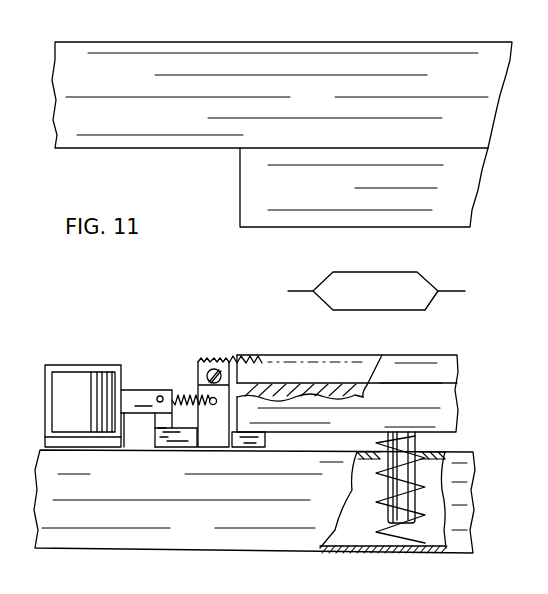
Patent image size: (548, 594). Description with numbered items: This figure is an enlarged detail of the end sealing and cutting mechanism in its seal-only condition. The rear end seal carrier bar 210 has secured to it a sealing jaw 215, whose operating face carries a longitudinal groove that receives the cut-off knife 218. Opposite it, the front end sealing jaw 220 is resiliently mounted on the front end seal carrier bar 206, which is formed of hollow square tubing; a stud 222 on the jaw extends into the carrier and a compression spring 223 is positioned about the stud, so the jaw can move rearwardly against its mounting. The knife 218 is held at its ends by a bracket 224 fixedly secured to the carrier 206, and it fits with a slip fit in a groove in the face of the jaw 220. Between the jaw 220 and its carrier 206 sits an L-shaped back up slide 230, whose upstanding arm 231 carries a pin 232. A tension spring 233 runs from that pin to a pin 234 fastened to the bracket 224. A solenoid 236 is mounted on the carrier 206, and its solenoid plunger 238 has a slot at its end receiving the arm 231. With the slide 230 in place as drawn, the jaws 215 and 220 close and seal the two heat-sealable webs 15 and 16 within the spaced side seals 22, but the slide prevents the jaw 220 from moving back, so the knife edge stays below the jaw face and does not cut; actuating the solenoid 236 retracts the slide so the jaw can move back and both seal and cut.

The rear end seal carrier bar 210 is at (151, 42).
The sealing jaw 215 is at (240, 188).
The heat-sealable web 15 is at (381, 272).
The side seals 22 is at (308, 291).
The heat-sealable web 16 is at (429, 306).
The solenoid 236 is at (67, 374).
The pin 232 is at (157, 399).
The tension spring 233 is at (184, 399).
The solenoid plunger 238 is at (128, 413).
The upstanding arm 231 is at (156, 428).
The back up slide 230 is at (185, 447).
The pin 234 is at (233, 440).
The bracket 224 is at (217, 340).
The cut-off knife 218 is at (265, 370).
The front end sealing jaw 220 is at (429, 360).
The stud 222 is at (393, 508).
The compression spring 223 is at (401, 553).
The front end seal carrier bar 206 is at (106, 548).